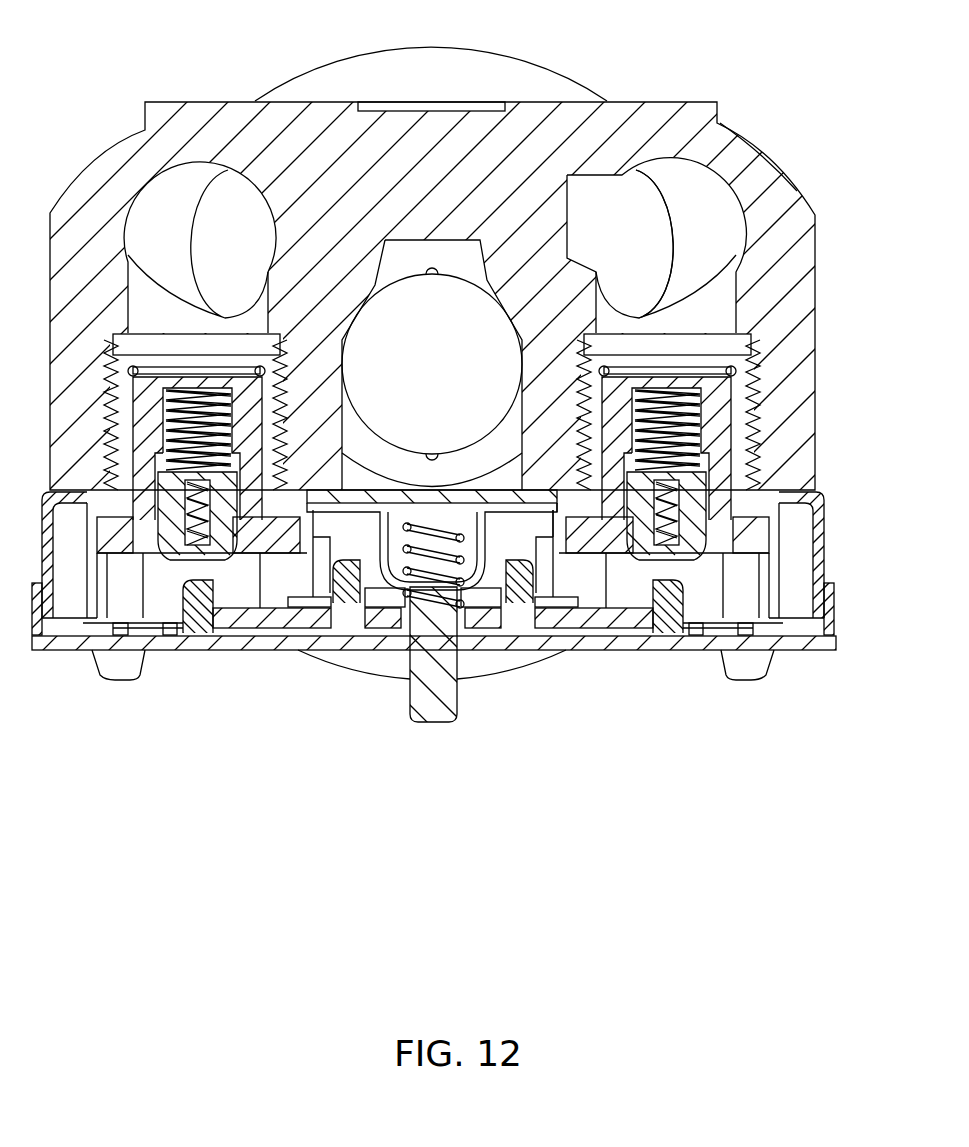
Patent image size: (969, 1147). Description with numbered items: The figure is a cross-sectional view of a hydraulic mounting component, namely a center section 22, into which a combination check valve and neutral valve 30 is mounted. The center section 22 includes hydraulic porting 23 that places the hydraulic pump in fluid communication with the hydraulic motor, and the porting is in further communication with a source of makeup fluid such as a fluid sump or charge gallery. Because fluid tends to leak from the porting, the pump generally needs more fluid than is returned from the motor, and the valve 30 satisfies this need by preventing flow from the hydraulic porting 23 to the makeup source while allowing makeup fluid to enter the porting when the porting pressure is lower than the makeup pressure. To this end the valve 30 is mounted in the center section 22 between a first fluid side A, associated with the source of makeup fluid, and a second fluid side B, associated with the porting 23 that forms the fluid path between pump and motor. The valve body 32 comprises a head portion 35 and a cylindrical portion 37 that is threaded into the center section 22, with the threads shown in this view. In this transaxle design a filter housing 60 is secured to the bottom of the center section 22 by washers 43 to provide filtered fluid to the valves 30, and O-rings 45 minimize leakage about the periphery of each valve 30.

The center section 22 is at (813, 240).
The hydraulic porting 23 is at (645, 241).
The combination check valve and neutral valve 30 is at (696, 588).
The valve body 32 is at (830, 613).
The head portion 35 is at (773, 538).
The cylindrical portion 37 is at (757, 422).
The washers 43 is at (548, 505).
The O-rings 45 is at (584, 510).
The filter housing 60 is at (829, 545).
The first fluid side A is at (737, 583).
The second fluid side B is at (712, 233).